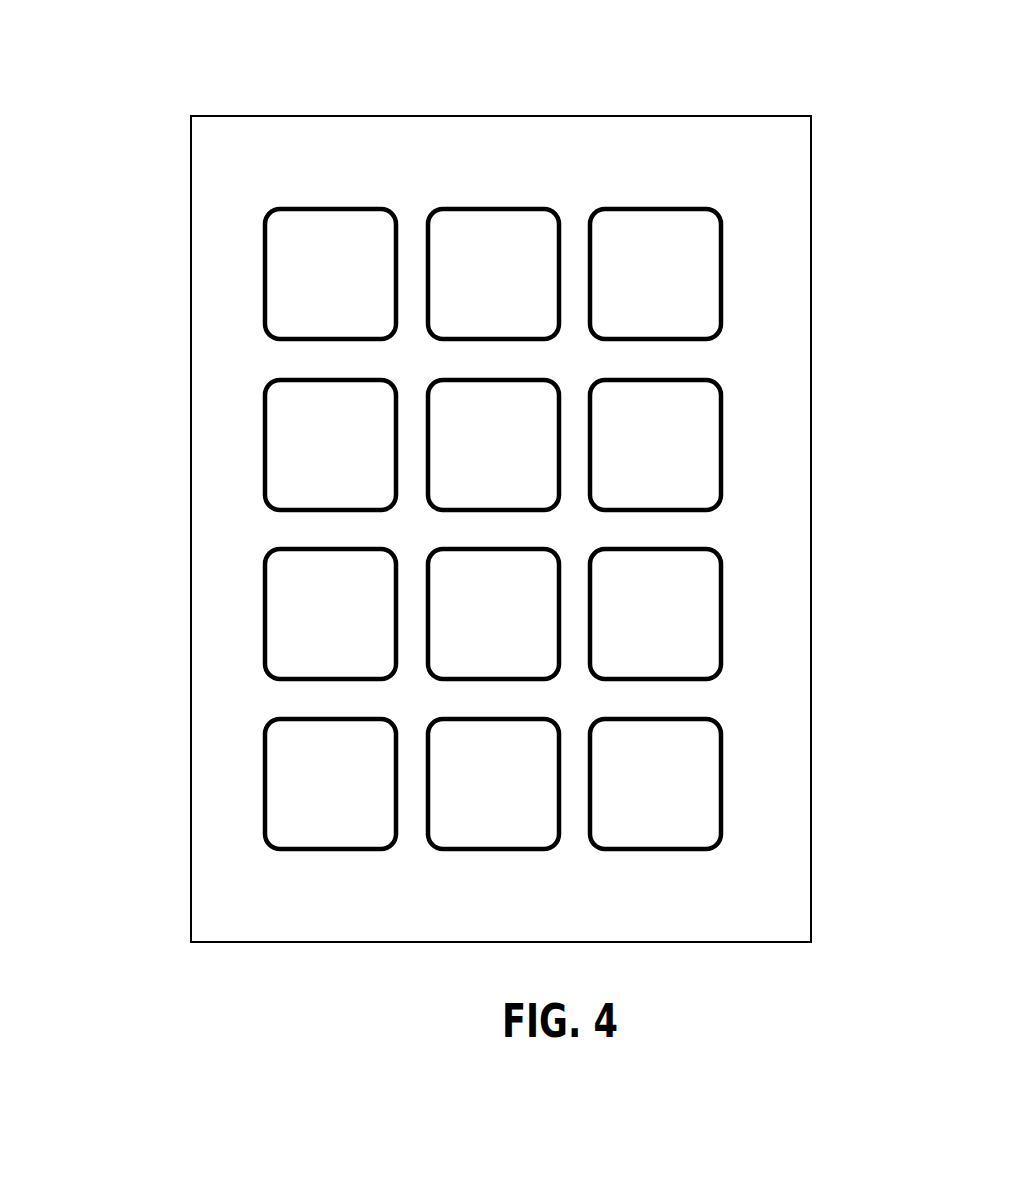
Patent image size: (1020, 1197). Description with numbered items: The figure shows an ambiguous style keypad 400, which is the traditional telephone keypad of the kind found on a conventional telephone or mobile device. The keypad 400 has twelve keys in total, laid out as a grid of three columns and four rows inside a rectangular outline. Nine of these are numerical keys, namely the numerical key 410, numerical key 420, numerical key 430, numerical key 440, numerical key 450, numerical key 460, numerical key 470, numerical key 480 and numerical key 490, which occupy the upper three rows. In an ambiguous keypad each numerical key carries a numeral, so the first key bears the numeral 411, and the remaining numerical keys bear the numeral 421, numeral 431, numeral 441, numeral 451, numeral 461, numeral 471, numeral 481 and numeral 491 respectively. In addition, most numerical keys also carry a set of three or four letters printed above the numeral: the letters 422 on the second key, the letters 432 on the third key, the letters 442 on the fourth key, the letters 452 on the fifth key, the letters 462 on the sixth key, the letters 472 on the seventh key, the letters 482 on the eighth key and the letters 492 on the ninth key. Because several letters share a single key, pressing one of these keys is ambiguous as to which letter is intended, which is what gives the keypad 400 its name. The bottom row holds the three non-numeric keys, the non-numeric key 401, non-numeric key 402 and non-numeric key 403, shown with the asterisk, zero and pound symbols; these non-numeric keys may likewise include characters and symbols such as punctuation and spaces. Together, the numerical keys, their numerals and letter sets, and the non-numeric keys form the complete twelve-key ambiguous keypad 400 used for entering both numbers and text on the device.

The ambiguous style keypad 400 is at (493, 474).
The non-numeric key 401 is at (265, 832).
The non-numeric key 402 is at (497, 850).
The non-numeric key 403 is at (722, 810).
The numerical key 410 is at (268, 202).
The numeral 411 is at (328, 310).
The numerical key 420 is at (499, 202).
The numeral 421 is at (484, 276).
The letters 422 is at (492, 228).
The numerical key 430 is at (727, 206).
The numeral 431 is at (670, 316).
The letters 432 is at (657, 232).
The numerical key 440 is at (245, 430).
The numeral 441 is at (320, 450).
The letters 442 is at (315, 403).
The numerical key 450 is at (495, 447).
The numeral 451 is at (482, 490).
The letters 452 is at (495, 400).
The numerical key 460 is at (757, 432).
The numeral 461 is at (672, 456).
The letters 462 is at (660, 400).
The numerical key 470 is at (229, 600).
The numeral 471 is at (320, 632).
The letters 472 is at (343, 565).
The numerical key 480 is at (496, 624).
The numeral 481 is at (470, 632).
The letters 482 is at (523, 575).
The numerical key 490 is at (755, 598).
The numeral 491 is at (672, 626).
The letters 492 is at (645, 565).